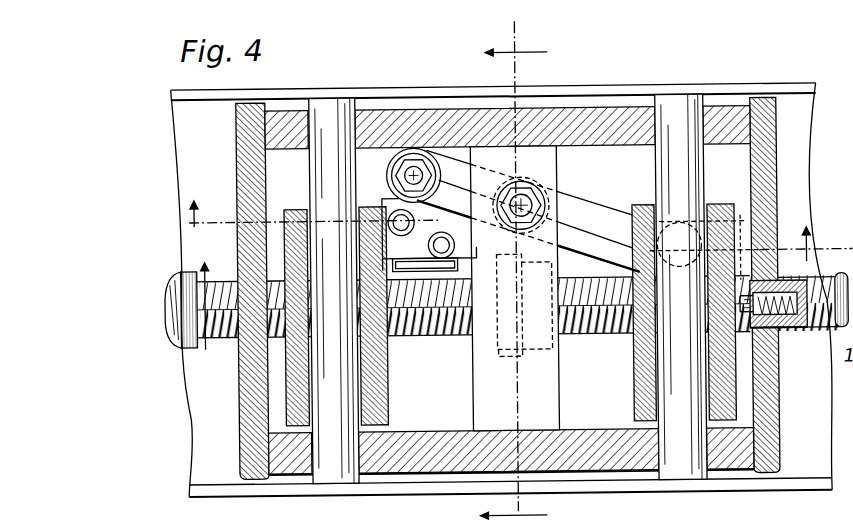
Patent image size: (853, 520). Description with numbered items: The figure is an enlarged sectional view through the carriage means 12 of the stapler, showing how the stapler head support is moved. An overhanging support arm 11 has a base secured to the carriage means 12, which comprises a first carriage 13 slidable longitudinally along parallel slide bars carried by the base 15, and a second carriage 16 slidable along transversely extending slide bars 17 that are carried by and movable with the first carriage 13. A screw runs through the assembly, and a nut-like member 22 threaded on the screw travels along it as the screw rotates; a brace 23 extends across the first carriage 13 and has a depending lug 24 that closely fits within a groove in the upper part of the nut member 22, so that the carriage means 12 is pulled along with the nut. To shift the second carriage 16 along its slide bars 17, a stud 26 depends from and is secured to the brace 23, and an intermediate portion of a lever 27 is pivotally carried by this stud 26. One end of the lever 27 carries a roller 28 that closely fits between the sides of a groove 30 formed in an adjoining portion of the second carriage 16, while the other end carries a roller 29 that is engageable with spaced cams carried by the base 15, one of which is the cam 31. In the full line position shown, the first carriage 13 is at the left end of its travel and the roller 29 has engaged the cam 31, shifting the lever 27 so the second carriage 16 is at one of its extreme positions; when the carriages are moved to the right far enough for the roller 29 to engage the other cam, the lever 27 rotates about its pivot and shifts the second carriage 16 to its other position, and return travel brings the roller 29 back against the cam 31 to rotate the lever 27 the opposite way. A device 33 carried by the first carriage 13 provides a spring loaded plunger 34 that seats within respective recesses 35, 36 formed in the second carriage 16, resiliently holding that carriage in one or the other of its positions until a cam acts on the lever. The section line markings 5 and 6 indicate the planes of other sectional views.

The section line 5- 5 is at (519, 271).
The section line 6- 6 is at (521, 270).
The overhanging support arm 11 is at (507, 318).
The carriage means 12 is at (425, 110).
The first carriage 13 is at (588, 124).
The base 15 is at (719, 92).
The second carriage 16 is at (383, 390).
The slide bars 17 is at (331, 125).
The nut-like member 22 is at (540, 335).
The brace 23 is at (482, 381).
The depending lug 24 is at (517, 363).
The stud 26 is at (528, 199).
The lever 27 is at (578, 197).
The roller 28 is at (656, 184).
The roller 29 is at (400, 167).
The groove 30 is at (741, 221).
The cam 31 is at (425, 236).
The device 33 is at (792, 339).
The spring loaded plunger 34 is at (752, 252).
The recess 35 is at (735, 354).
The recess 36 is at (733, 367).